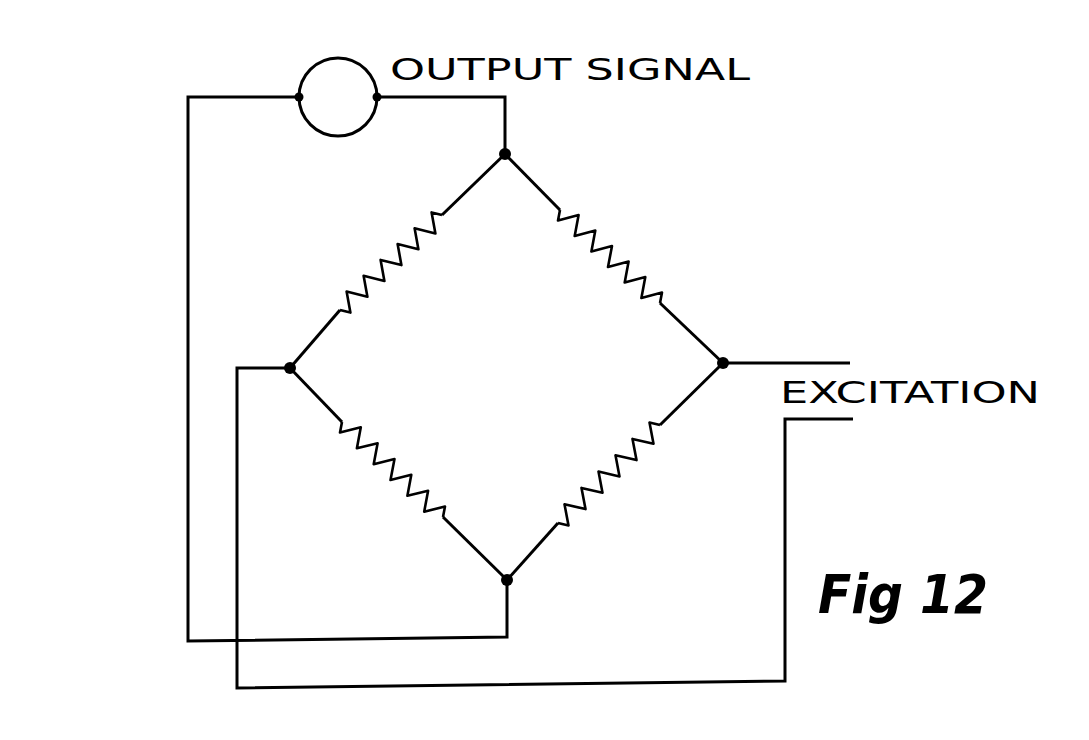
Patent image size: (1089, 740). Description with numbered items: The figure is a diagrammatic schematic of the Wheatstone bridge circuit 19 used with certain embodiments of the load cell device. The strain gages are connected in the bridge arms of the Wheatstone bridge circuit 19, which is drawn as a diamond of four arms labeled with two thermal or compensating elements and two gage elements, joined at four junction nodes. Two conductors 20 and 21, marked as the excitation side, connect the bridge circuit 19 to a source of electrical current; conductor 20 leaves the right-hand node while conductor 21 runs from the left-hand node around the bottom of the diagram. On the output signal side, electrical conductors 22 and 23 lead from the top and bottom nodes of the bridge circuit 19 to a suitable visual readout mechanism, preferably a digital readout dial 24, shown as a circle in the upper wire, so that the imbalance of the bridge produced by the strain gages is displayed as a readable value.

The Wheatstone bridge circuit 19 is at (733, 207).
The conductor 20 is at (835, 361).
The conductor 21 is at (838, 419).
The electrical conductor 22 is at (505, 117).
The electrical conductor 23 is at (188, 253).
The digital readout dial 24 is at (310, 69).